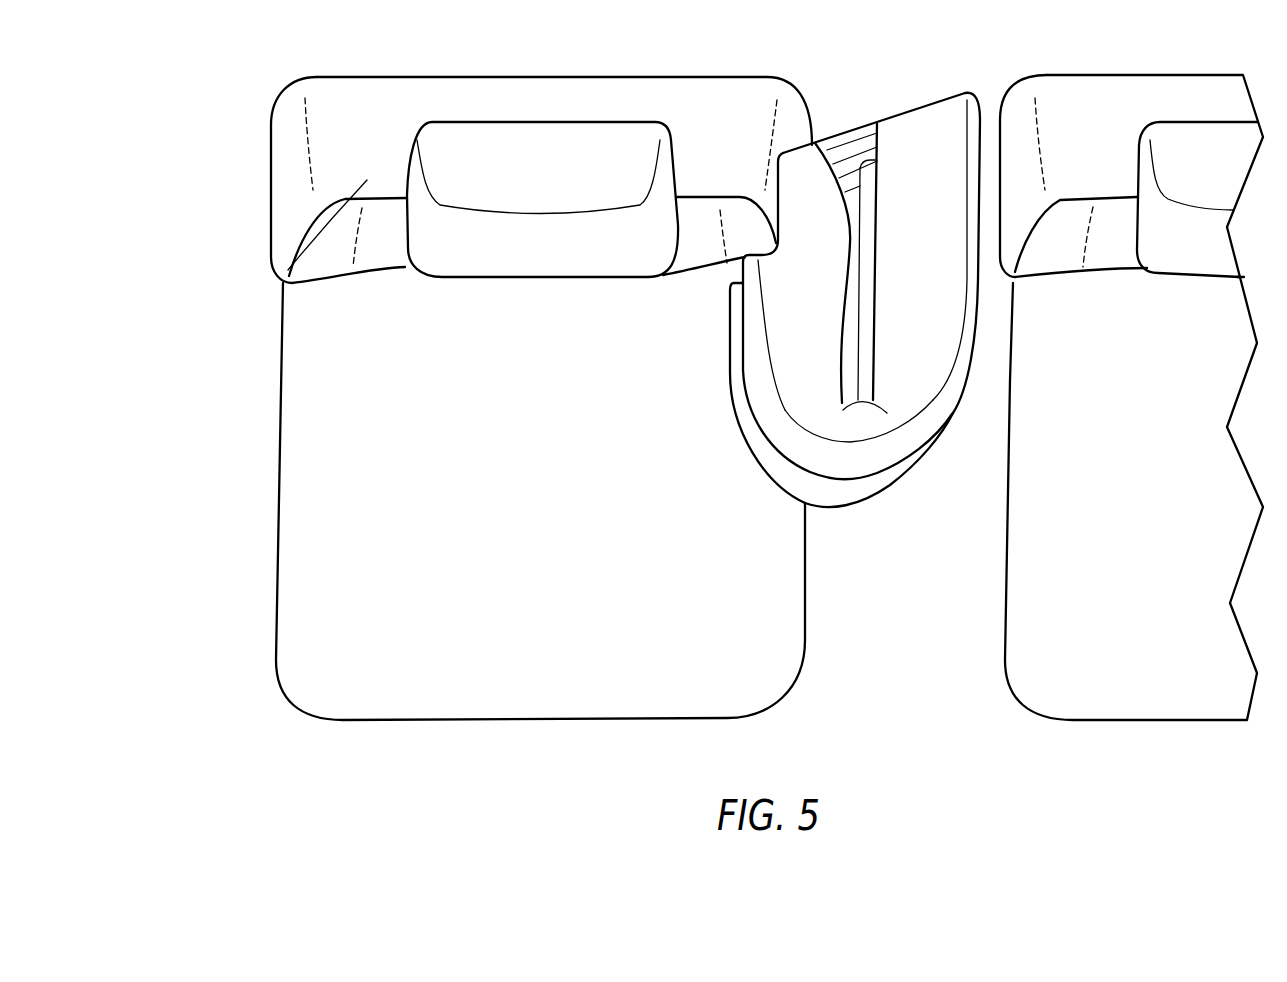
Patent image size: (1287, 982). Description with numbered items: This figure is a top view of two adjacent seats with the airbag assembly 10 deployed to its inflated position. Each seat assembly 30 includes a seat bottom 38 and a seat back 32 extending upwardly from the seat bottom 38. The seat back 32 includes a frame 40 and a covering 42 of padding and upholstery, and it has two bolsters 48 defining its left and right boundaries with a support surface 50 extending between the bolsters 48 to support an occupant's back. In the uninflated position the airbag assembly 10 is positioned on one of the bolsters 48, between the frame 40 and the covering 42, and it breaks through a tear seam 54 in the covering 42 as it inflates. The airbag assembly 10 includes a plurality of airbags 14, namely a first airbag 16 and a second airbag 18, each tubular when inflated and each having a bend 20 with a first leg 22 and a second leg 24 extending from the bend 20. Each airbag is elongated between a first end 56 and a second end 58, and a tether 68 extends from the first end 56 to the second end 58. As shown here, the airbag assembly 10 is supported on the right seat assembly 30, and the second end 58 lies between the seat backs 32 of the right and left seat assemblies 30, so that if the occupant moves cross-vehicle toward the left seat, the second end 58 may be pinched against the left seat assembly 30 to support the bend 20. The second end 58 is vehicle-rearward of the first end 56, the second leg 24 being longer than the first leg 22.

The airbag assembly 10 is at (915, 561).
The airbags 14 is at (843, 477).
The first airbag 16 is at (928, 410).
The second airbag 18 is at (907, 472).
The bend 20 is at (867, 453).
The first leg 22 is at (795, 290).
The second leg 24 is at (937, 167).
The seat assembly 30 is at (227, 220).
The seat back 32 is at (302, 147).
The seat bottom 38 is at (327, 500).
The frame 40 is at (338, 108).
The covering 42 is at (380, 245).
The bolsters 48 is at (327, 255).
The support surface 50 is at (325, 212).
The tear seam 54 is at (733, 257).
The first end 56 is at (813, 142).
The second end 58 is at (921, 107).
The tether 68 is at (850, 162).